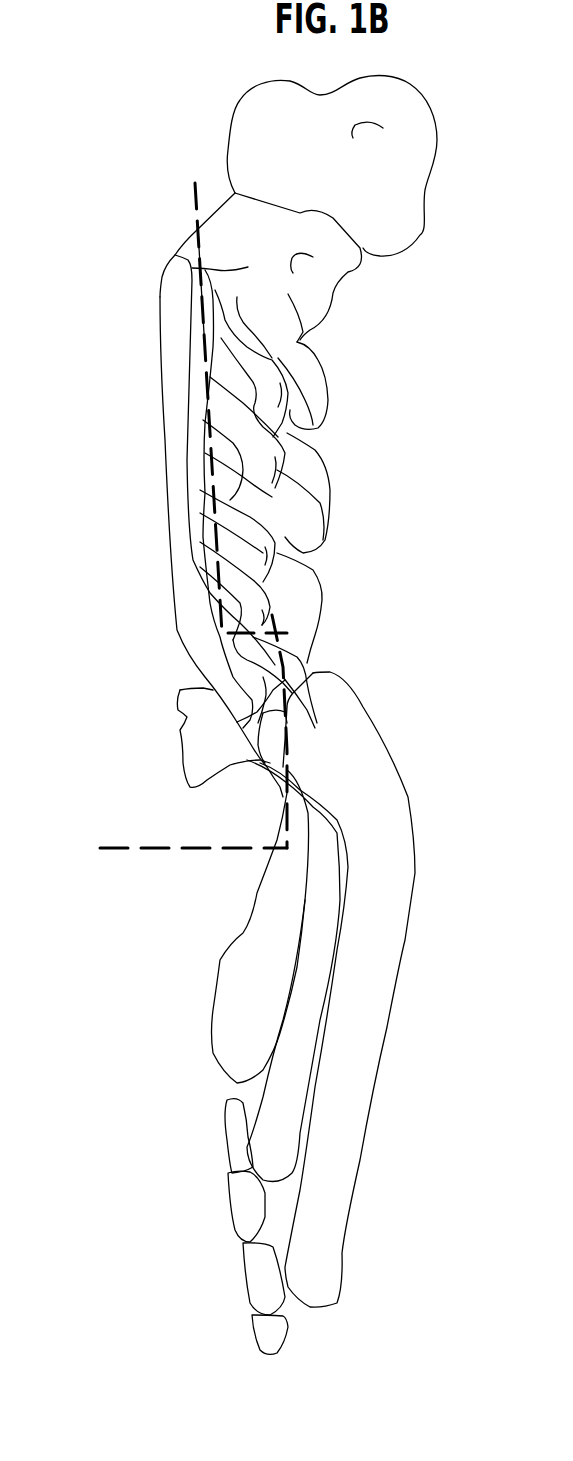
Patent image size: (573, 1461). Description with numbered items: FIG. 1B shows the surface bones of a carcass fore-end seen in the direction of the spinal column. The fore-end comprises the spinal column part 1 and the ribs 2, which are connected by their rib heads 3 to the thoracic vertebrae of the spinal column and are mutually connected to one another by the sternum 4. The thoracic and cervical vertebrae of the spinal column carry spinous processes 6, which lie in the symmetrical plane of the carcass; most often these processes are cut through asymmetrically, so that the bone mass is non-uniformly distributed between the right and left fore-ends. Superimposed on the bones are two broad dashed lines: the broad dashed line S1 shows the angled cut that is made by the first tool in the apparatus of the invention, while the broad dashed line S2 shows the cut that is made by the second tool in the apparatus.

The spinal column part 1 is at (187, 714).
The ribs 2 is at (280, 1105).
The rib heads 3 is at (267, 770).
The sternum 4 is at (243, 1213).
The spinous processes 6 is at (173, 387).
The broad dashed line S1 is at (182, 196).
The broad dashed line S2 is at (122, 852).